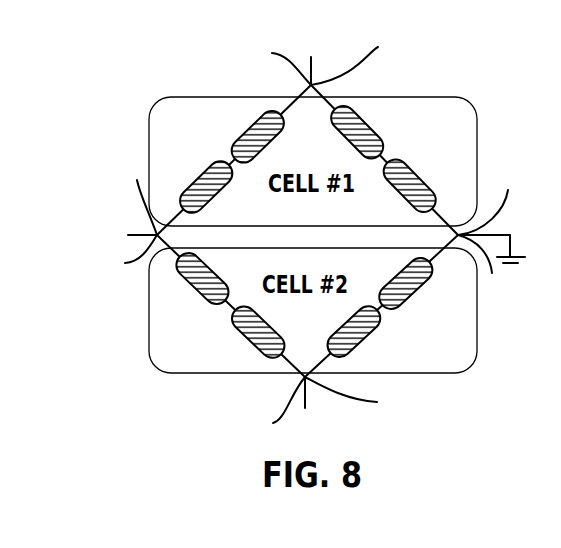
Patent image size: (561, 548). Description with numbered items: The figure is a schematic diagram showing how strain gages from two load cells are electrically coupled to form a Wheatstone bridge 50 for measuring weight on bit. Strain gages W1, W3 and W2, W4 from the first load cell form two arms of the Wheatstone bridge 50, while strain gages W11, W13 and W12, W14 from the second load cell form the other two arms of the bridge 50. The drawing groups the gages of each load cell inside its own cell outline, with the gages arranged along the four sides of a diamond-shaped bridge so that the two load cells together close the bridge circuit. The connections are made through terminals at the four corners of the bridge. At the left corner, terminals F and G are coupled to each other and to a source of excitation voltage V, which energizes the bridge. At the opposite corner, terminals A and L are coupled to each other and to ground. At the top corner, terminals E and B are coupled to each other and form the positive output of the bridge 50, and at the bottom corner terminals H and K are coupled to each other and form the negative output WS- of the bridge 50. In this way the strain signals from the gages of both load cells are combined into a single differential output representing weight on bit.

The Wheatstone bridge 50 is at (193, 437).
The strain gage W1 is at (253, 133).
The strain gage W2 is at (364, 130).
The strain gage W3 is at (200, 186).
The strain gage W4 is at (415, 185).
The strain gage W11 is at (367, 337).
The strain gage W12 is at (246, 338).
The strain gage W13 is at (414, 293).
The strain gage W14 is at (192, 288).
The terminal E is at (283, 64).
The terminal B is at (356, 60).
The terminal F is at (141, 196).
The terminal G is at (131, 256).
The excitation voltage V is at (137, 217).
The terminal A is at (489, 200).
The terminal L is at (483, 268).
The terminal H is at (279, 405).
The terminal K is at (352, 396).
The negative output WS- is at (330, 402).